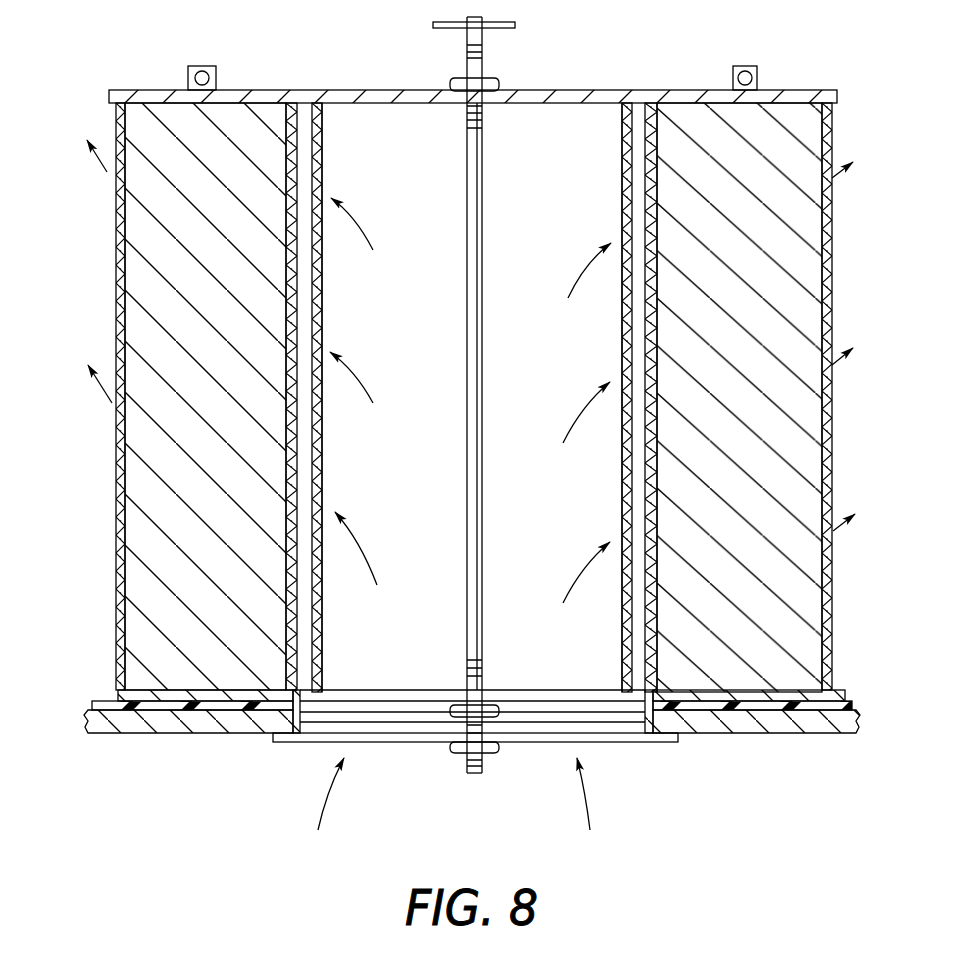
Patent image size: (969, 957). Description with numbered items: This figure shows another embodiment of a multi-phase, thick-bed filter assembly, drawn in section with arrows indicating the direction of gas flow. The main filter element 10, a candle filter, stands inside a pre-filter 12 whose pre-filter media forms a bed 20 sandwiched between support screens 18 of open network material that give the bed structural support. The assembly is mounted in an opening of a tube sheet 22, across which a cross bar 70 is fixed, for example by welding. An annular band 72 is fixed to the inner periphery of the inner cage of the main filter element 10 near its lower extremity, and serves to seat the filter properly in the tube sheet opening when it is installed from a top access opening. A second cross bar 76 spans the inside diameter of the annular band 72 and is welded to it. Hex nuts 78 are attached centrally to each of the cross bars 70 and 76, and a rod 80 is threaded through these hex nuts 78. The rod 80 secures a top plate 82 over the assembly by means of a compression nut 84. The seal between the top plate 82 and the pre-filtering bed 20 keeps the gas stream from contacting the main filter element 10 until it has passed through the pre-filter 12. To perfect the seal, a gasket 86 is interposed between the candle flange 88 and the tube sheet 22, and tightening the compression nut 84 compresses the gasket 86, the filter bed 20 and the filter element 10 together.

The main filter element 10 is at (107, 650).
The pre-filter 12 is at (400, 262).
The support screens 18 is at (827, 290).
The bed 20 is at (648, 100).
The tube sheet 22 is at (719, 735).
The cross bar 70 is at (612, 741).
The annular band 72 is at (318, 708).
The second cross bar 76 is at (578, 690).
The hex nuts 78 is at (492, 745).
The rod 80 is at (472, 192).
The top plate 82 is at (378, 89).
The compression nut 84 is at (498, 85).
The gasket 86 is at (806, 712).
The candle flange 88 is at (841, 700).